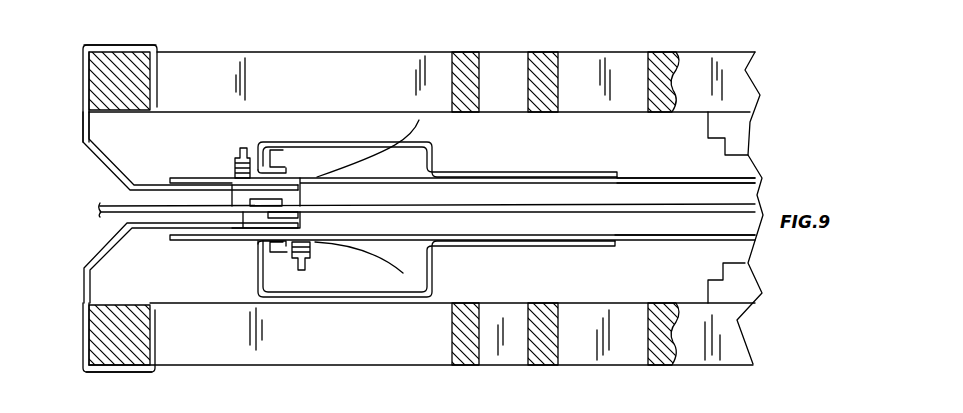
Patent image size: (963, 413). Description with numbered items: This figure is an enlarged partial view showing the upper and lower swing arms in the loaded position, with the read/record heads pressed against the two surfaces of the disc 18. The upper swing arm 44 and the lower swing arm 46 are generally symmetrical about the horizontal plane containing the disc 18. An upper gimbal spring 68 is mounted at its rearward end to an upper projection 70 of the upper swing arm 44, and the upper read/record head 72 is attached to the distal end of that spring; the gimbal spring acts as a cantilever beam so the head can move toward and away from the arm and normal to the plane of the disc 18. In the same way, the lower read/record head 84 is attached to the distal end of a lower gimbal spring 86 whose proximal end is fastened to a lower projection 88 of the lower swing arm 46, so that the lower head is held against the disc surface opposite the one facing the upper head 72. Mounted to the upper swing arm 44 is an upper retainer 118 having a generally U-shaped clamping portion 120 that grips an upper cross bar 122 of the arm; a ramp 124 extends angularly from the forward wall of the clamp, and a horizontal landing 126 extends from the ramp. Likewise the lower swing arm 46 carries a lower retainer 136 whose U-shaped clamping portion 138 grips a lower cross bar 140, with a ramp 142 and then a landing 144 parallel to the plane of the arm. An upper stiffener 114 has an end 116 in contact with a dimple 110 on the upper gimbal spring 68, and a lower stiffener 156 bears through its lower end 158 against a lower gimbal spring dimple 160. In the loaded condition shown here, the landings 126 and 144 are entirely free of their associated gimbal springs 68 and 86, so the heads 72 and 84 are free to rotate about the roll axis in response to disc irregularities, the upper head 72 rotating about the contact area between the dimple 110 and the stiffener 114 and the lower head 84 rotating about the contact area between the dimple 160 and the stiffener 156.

The disc 18 is at (520, 206).
The upper swing arm 44 is at (335, 70).
The lower swing arm 46 is at (303, 366).
The upper gimbal spring 68 is at (676, 177).
The upper projection 70 is at (706, 125).
The upper read/record head 72 is at (305, 199).
The lower read/record head 84 is at (310, 230).
The lower gimbal spring 86 is at (667, 241).
The lower projection 88 is at (706, 292).
The dimple 110 is at (292, 171).
The upper stiffener 114 is at (347, 142).
The end of upper stiffener 116 is at (282, 150).
The upper retainer 118 is at (83, 76).
The clamping portion 120 is at (117, 43).
The upper cross bar 122 is at (138, 87).
The ramp 124 is at (108, 162).
The landing 126 is at (152, 183).
The lower retainer 136 is at (83, 334).
The clamping portion 138 is at (110, 373).
The lower cross bar 140 is at (138, 343).
The ramp 142 is at (88, 260).
The landing 144 is at (180, 243).
The lower stiffener 156 is at (437, 272).
The lower end 158 is at (272, 254).
The lower gimbal spring dimple 160 is at (262, 247).